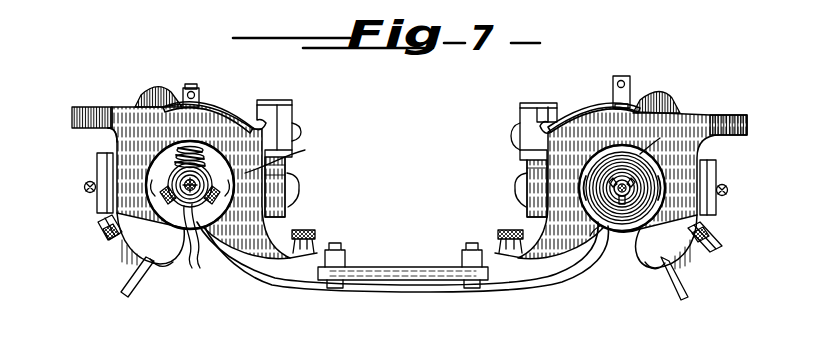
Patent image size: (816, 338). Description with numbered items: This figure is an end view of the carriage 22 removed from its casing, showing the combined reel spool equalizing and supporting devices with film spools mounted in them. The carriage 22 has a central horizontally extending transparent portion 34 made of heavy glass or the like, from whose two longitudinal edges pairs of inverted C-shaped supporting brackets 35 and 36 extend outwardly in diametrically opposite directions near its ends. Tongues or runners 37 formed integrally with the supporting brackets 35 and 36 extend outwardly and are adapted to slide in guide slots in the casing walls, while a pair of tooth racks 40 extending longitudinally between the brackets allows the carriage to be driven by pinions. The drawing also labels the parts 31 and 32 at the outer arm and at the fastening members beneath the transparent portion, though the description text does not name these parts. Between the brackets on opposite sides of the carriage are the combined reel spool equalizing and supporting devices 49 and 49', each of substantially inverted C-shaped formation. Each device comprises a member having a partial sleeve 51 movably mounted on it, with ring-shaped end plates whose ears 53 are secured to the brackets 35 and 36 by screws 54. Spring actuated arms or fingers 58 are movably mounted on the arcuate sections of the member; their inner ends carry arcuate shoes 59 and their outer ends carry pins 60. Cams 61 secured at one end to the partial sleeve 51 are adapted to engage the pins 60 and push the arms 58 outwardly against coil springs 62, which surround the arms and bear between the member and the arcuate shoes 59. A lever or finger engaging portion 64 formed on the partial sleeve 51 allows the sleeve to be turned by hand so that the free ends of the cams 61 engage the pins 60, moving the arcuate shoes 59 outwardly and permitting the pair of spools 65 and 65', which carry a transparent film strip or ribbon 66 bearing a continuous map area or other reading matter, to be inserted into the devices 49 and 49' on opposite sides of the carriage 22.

The carriage 22 is at (107, 106).
The supporting arm 31 is at (72, 118).
The bolt 32 is at (330, 231).
The transparent portion 34 is at (402, 272).
The supporting bracket 35 is at (285, 170).
The supporting bracket 36 is at (527, 160).
The tongue or runner 37 is at (755, 116).
The tooth rack 40 is at (292, 101).
The combined reel spool equalizing and supporting device 49 is at (208, 107).
The combined reel spool equalizing and supporting device 49' is at (594, 95).
The partial sleeve 51 is at (258, 118).
The ear 53 is at (97, 166).
The screw 54 is at (85, 187).
The spring actuated arm or finger 58 is at (188, 88).
The arcuate shoe 59 is at (117, 155).
The pin 60 is at (197, 93).
The cam 61 is at (158, 90).
The coil spring 62 is at (220, 135).
The lever or finger engaging portion 64 is at (126, 296).
The spool 65 is at (184, 142).
The spool 65' is at (632, 183).
The transparent film strip or ribbon 66 is at (426, 290).